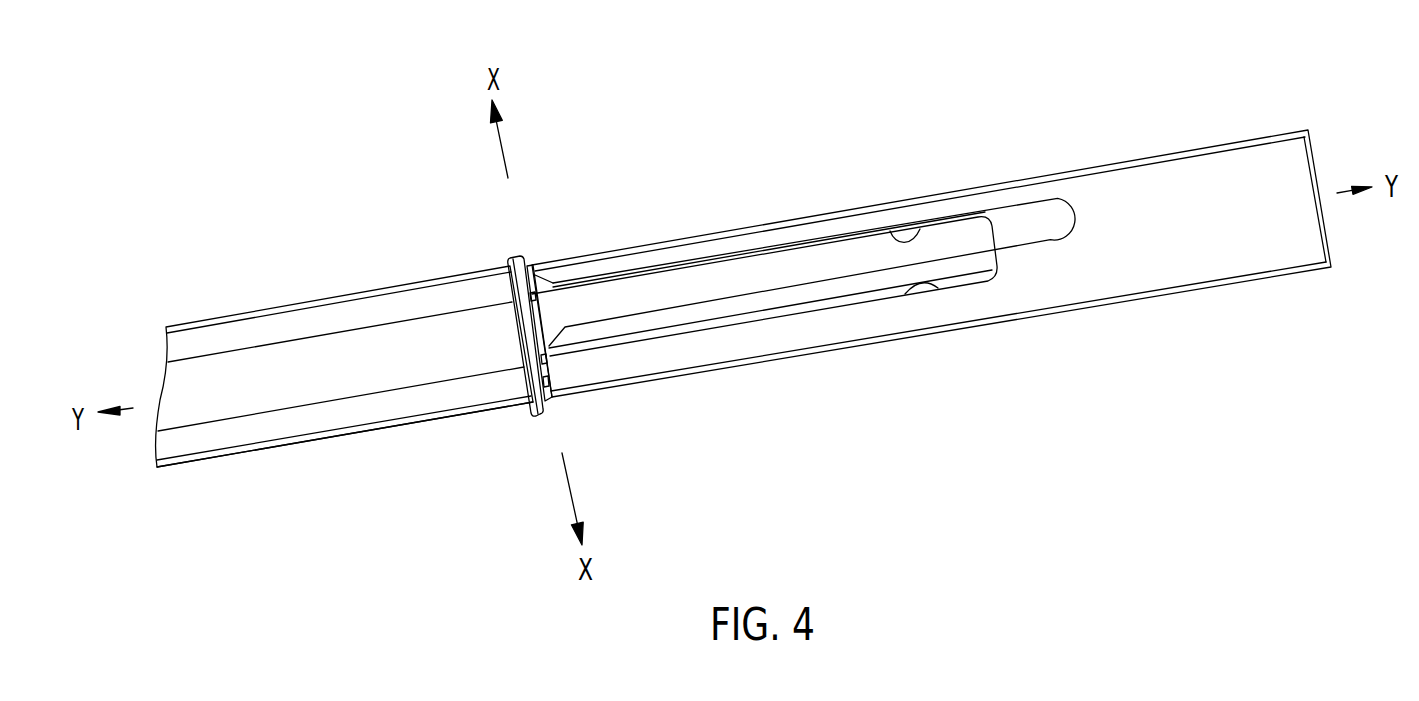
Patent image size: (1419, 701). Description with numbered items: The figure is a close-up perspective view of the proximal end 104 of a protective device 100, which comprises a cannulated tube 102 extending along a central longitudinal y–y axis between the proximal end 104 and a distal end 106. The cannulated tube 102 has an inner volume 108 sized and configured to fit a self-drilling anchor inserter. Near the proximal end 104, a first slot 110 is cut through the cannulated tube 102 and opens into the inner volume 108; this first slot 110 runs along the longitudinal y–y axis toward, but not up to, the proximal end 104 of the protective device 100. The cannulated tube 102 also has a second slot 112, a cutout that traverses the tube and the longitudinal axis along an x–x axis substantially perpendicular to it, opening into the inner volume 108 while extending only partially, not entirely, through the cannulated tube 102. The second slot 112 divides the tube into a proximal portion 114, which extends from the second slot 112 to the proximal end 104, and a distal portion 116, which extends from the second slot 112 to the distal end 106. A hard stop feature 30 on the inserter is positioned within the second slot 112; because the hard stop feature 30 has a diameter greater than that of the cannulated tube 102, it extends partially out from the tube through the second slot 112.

The protective device 100 is at (748, 112).
The cannulated tube 102 is at (560, 263).
The proximal end 104 is at (1180, 88).
The distal end 106 is at (187, 275).
The inner volume 108 is at (228, 460).
The first slot 110 is at (1025, 253).
The second slot 112 is at (564, 422).
The proximal portion 114 is at (720, 370).
The distal portion 116 is at (372, 432).
The hard stop feature 30 is at (511, 253).